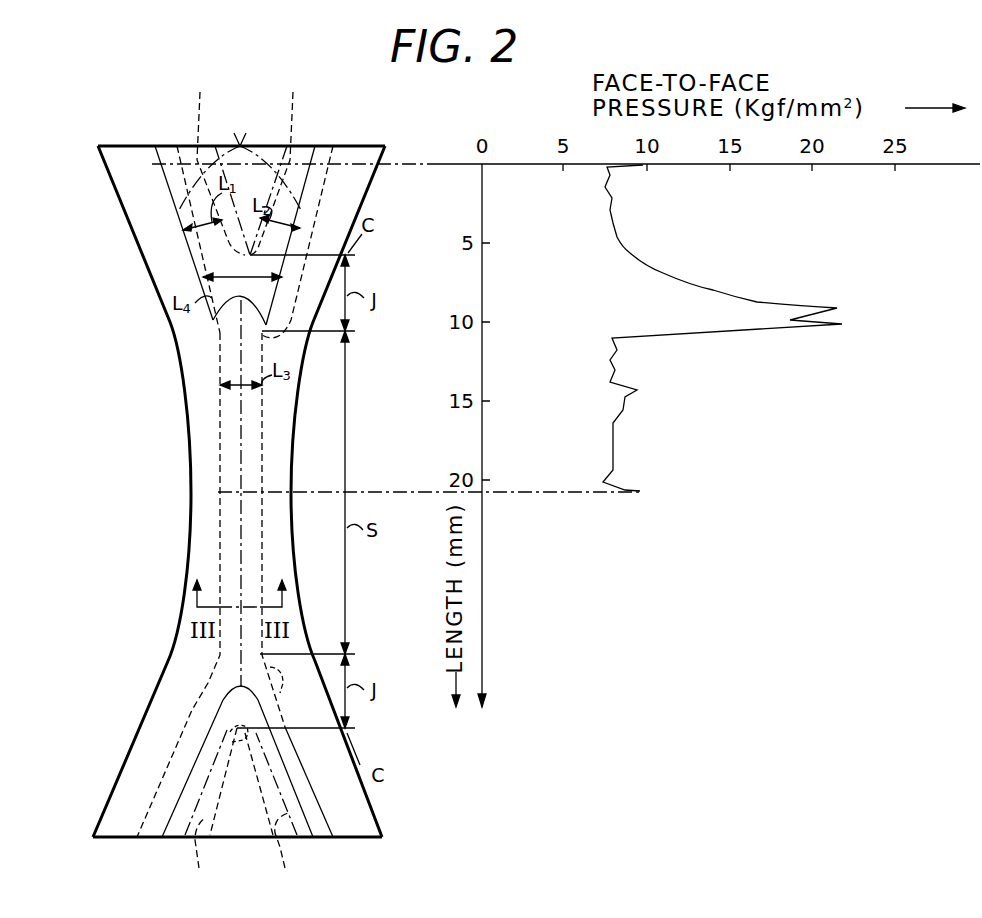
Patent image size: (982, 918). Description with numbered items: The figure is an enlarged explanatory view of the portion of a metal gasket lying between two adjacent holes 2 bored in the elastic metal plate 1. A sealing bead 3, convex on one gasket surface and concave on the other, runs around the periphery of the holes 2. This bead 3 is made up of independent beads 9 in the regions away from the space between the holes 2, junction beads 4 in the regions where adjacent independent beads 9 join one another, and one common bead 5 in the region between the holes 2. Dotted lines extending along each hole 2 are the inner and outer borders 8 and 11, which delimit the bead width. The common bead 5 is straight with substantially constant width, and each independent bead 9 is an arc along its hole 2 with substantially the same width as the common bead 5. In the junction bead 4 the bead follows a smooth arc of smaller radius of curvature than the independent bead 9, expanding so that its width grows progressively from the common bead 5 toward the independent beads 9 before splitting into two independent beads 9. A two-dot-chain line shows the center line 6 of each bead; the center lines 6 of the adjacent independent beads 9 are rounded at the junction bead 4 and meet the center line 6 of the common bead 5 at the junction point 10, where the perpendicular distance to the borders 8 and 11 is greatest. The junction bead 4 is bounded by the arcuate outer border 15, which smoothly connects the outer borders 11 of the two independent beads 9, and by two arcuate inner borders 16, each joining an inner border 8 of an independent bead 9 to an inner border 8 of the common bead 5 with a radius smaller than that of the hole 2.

The elastic metal plate 1 is at (150, 316).
The hole 2 is at (190, 461).
The bead 3 is at (202, 265).
The junction bead 4 is at (270, 294).
The common bead 5 is at (237, 508).
The center line 6 is at (240, 146).
The inner border 8 is at (195, 195).
The independent bead 9 is at (157, 153).
The junction point 10 is at (218, 320).
The outer border 11 is at (245, 480).
The arcuate outer border 15 is at (238, 256).
The arcuate inner border 16 is at (216, 335).